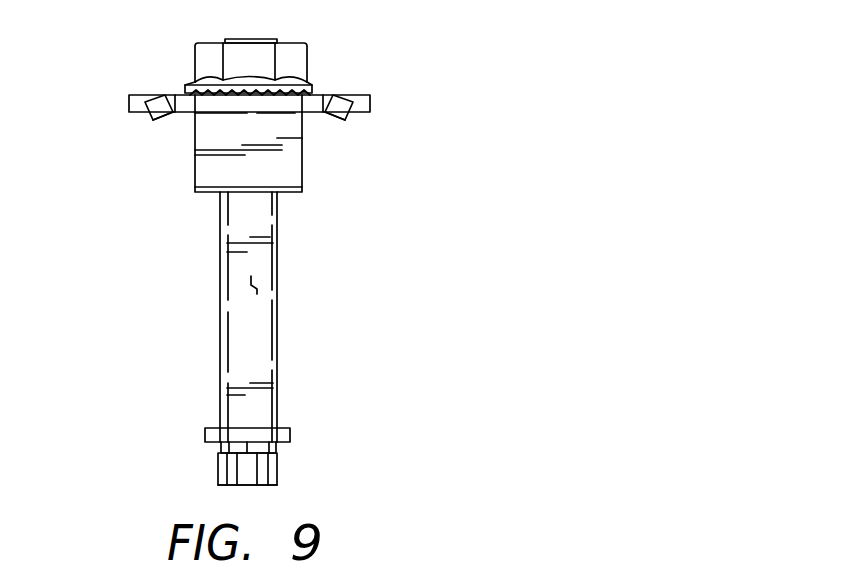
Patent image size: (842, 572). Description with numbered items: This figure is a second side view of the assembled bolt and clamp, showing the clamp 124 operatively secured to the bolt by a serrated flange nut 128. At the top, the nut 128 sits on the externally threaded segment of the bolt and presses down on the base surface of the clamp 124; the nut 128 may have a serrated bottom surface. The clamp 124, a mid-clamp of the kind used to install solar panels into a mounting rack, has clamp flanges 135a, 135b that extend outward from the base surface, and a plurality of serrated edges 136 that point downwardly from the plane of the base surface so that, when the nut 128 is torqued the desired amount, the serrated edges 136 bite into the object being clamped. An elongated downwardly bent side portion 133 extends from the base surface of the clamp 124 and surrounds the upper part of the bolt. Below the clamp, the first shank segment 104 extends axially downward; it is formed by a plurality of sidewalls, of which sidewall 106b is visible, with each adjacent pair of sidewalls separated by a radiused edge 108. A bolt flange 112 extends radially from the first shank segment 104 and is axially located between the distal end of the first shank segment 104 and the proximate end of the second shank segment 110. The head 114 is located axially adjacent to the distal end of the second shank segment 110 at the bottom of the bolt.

The first shank segment 104 is at (278, 383).
The sidewall 106b is at (254, 285).
The radiused edge 108 is at (227, 347).
The second shank segment 110 is at (276, 450).
The bolt flange 112 is at (208, 430).
The head 114 is at (216, 468).
The clamp 124 is at (366, 91).
The serrated flange nut 128 is at (307, 47).
The downwardly bent side portion 133 is at (202, 193).
The clamp flange 135a is at (353, 111).
The clamp flange 135b is at (140, 114).
The serrated edge 136 is at (152, 122).